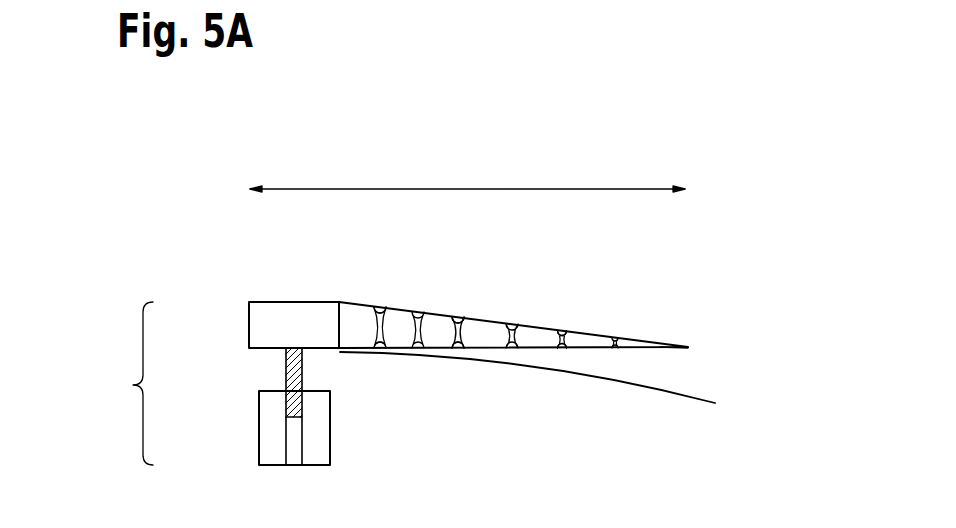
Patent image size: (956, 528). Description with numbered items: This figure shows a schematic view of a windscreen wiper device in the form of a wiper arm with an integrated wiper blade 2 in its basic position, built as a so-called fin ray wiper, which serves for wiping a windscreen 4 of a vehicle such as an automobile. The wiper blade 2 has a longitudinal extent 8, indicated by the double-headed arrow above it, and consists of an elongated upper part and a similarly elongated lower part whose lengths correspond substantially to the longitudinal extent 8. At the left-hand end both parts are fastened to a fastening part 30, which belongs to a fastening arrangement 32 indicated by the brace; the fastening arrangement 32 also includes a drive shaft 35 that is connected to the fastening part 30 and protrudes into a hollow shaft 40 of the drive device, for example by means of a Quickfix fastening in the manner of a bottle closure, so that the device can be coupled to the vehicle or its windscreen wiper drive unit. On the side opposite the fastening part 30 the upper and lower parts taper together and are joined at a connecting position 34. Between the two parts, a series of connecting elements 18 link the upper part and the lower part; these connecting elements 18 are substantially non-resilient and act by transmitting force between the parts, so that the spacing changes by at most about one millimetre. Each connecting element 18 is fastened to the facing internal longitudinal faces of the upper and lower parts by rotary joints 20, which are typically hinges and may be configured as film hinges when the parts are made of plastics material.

The wiper blade 2 is at (690, 242).
The windscreen 4 is at (663, 393).
The longitudinal extent 8 is at (452, 189).
The connecting elements 18 is at (385, 328).
The rotary joints 20 is at (380, 303).
The fastening part 30 is at (258, 326).
The fastening arrangement 32 is at (123, 383).
The connecting position 34 is at (688, 346).
The drive shaft 35 is at (286, 370).
The hollow shaft 40 is at (272, 430).